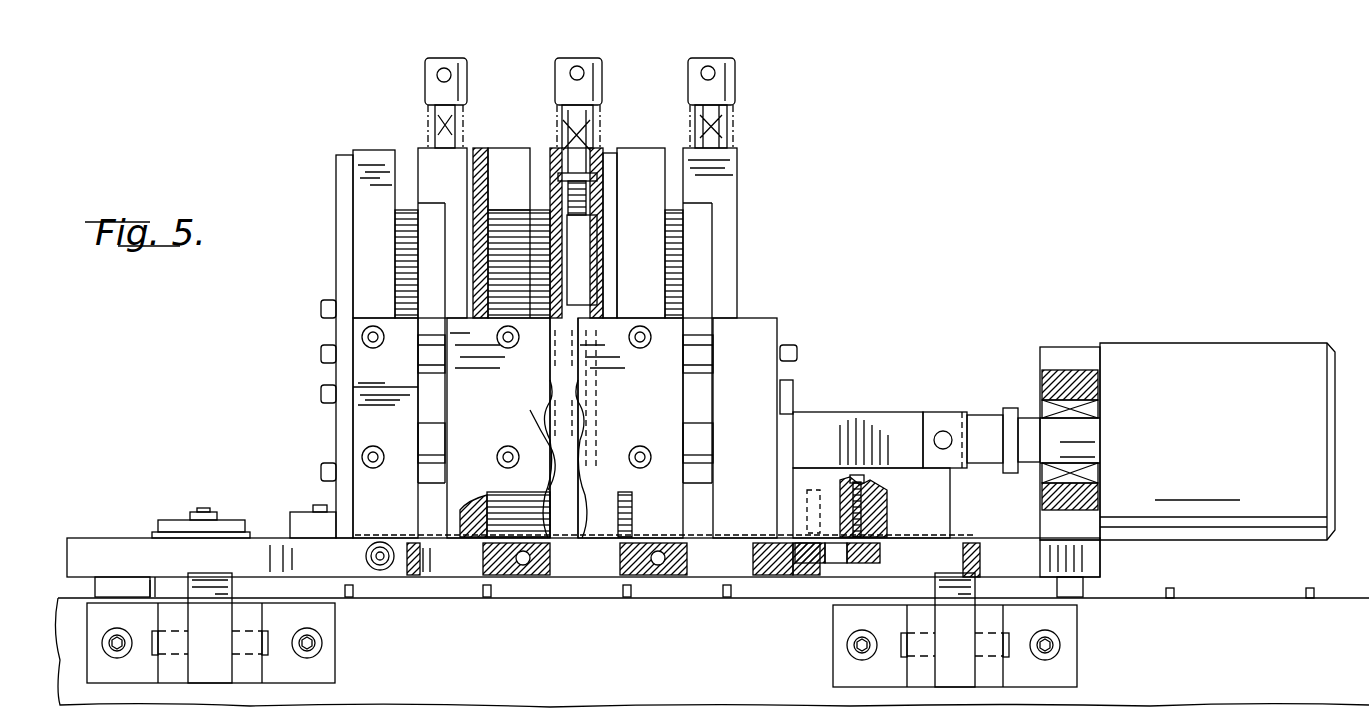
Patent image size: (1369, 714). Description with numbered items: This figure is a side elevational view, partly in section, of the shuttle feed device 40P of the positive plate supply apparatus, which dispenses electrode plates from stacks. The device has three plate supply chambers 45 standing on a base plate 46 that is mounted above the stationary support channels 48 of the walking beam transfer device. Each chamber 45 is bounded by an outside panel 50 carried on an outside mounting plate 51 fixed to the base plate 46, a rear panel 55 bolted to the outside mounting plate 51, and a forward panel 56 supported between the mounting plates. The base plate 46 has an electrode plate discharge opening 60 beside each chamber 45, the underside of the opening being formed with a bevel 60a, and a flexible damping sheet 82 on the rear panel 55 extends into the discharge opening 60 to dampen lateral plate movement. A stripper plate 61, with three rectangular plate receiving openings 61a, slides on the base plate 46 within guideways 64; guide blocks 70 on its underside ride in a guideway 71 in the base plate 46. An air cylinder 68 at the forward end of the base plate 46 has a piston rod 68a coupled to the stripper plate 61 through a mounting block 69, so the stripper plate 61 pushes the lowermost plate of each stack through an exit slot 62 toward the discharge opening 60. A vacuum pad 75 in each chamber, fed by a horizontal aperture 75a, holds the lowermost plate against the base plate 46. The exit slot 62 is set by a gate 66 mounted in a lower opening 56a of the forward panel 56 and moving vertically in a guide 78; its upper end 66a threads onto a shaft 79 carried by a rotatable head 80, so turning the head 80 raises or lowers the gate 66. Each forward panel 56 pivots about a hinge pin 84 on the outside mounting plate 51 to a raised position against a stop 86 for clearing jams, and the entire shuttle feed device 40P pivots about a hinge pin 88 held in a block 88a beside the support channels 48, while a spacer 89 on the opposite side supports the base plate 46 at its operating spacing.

The shuttle feed device 40P is at (303, 122).
The plate supply chamber 45 is at (485, 205).
The base plate 46 is at (258, 545).
The stationary support channels 48 is at (745, 683).
The outside panel 50 is at (372, 182).
The outside mounting plate 51 is at (372, 430).
The rear panel 55 is at (497, 168).
The forward panel 56 is at (450, 215).
The lower opening 56a is at (553, 463).
The electrode plate discharge opening 60 is at (438, 537).
The bevel 60a is at (520, 580).
The stripper plate 61 is at (705, 515).
The plate receiving opening 61a is at (613, 559).
The exit slot 62 is at (556, 532).
The guideway 64 is at (307, 510).
The gate 66 is at (610, 463).
The upper end of gate 66a is at (583, 283).
The air cylinder 68 is at (1265, 347).
The piston rod 68a is at (1080, 430).
The mounting block 69 is at (912, 413).
The guide block 70 is at (840, 577).
The guideway 71 is at (943, 538).
The vacuum pad 75 is at (517, 537).
The horizontal aperture 75a is at (410, 580).
The guide 78 is at (612, 245).
The shaft 79 is at (548, 193).
The rotatable head 80 is at (426, 84).
The flexible damping sheet 82 is at (467, 577).
The hinge pin 84 is at (336, 394).
The stop 86 is at (432, 366).
The hinge pin 88 is at (268, 650).
The block 88a is at (200, 672).
The spacer 89 is at (120, 580).